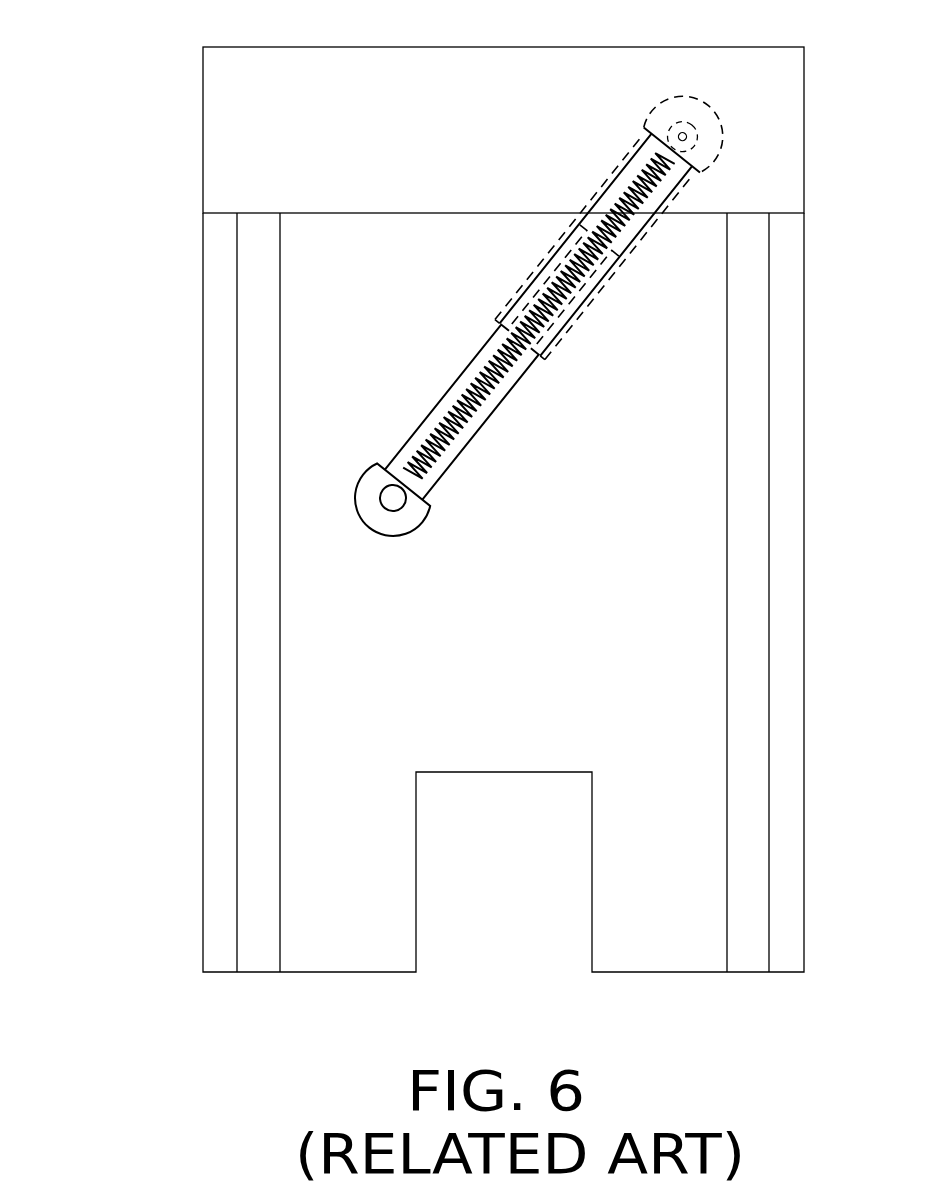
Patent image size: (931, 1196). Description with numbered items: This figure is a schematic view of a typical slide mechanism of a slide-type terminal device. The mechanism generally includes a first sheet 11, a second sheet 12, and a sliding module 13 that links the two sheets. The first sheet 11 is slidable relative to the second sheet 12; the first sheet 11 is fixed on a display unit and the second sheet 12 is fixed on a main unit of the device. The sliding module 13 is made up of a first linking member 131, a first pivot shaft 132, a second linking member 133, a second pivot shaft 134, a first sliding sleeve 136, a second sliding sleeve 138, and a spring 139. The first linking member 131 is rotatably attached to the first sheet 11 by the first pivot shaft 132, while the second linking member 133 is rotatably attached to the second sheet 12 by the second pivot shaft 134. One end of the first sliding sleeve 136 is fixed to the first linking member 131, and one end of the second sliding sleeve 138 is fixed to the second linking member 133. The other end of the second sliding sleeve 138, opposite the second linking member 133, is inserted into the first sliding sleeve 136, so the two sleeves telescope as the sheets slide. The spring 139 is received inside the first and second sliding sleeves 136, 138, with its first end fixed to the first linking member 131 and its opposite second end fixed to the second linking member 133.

The first sheet 11 is at (250, 63).
The second sheet 12 is at (308, 752).
The sliding module 13 is at (498, 319).
The first linking member 131 is at (708, 128).
The first pivot shaft 132 is at (686, 127).
The second linking member 133 is at (385, 522).
The second pivot shaft 134 is at (390, 497).
The first sliding sleeve 136 is at (603, 202).
The second sliding sleeve 138 is at (465, 370).
The spring 139 is at (433, 433).